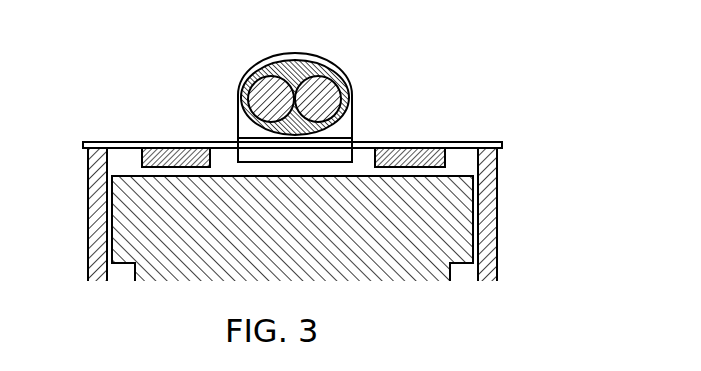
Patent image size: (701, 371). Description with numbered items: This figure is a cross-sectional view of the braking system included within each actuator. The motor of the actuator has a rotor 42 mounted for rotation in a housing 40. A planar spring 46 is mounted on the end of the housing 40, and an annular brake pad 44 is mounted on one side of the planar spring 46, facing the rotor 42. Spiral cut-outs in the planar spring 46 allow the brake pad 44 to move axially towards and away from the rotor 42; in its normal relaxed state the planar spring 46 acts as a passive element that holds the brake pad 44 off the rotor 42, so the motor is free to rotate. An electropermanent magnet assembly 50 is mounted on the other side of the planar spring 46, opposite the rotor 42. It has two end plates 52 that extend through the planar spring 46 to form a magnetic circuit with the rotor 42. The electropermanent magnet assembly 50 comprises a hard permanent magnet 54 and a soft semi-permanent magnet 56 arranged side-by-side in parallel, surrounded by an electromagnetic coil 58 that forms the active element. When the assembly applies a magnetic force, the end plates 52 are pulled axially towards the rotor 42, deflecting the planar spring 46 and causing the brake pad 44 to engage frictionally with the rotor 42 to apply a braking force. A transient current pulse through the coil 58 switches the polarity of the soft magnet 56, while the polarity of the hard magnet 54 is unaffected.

The housing 40 is at (497, 243).
The rotor 42 is at (403, 256).
The annular brake pad 44 is at (142, 156).
The planar spring 46 is at (447, 142).
The electropermanent magnet assembly 50 is at (362, 81).
The end plates 52 is at (236, 130).
The hard magnet 54 is at (247, 72).
The soft magnet 56 is at (326, 78).
The electromagnetic coil 58 is at (286, 80).